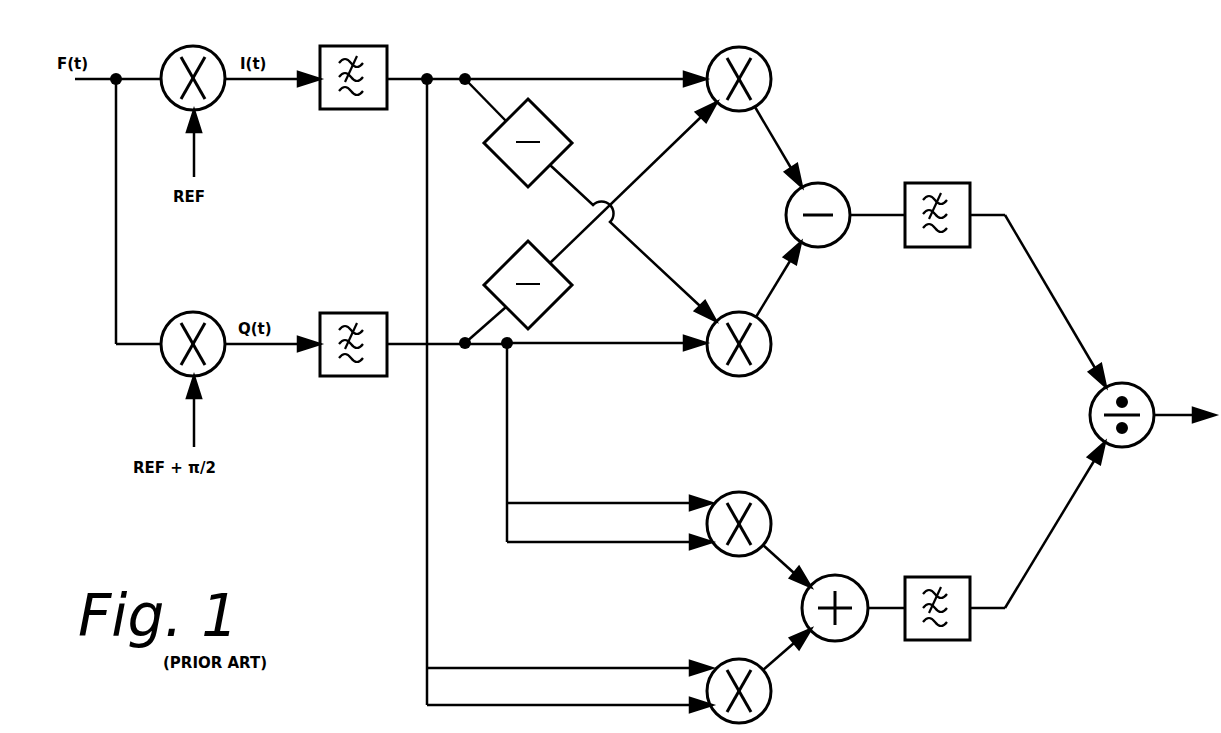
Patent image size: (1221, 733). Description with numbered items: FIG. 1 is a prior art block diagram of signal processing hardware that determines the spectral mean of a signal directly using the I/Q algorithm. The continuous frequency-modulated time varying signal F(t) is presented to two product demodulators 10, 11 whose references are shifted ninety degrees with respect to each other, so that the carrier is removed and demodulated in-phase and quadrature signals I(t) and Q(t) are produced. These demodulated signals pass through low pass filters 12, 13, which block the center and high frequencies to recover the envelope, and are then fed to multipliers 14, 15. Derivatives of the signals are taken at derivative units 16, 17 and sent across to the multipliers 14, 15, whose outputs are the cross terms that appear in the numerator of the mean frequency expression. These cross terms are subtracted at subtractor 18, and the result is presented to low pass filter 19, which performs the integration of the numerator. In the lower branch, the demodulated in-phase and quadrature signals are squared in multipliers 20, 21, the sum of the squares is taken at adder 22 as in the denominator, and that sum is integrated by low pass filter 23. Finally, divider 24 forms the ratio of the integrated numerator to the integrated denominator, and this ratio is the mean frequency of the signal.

The product demodulator 10 is at (190, 50).
The product demodulator 11 is at (192, 313).
The low pass filter 12 is at (373, 47).
The low pass filter 13 is at (357, 370).
The multiplier 14 is at (735, 50).
The multiplier 15 is at (763, 370).
The derivative unit 16 is at (558, 130).
The derivative unit 17 is at (556, 301).
The subtractor 18 is at (837, 192).
The low pass filter 19 is at (967, 188).
The multiplier 20 is at (763, 507).
The multiplier 21 is at (768, 708).
The adder 22 is at (850, 638).
The low pass filter 23 is at (955, 580).
The divider 24 is at (1143, 391).